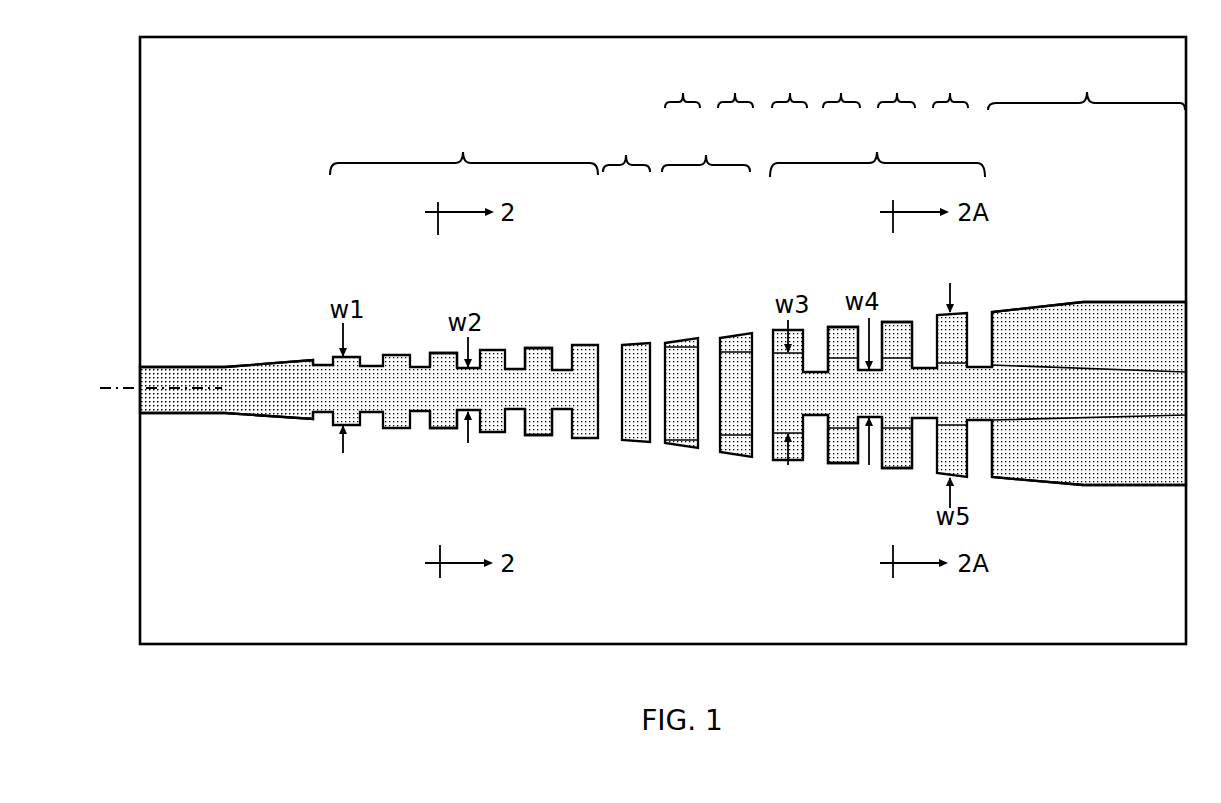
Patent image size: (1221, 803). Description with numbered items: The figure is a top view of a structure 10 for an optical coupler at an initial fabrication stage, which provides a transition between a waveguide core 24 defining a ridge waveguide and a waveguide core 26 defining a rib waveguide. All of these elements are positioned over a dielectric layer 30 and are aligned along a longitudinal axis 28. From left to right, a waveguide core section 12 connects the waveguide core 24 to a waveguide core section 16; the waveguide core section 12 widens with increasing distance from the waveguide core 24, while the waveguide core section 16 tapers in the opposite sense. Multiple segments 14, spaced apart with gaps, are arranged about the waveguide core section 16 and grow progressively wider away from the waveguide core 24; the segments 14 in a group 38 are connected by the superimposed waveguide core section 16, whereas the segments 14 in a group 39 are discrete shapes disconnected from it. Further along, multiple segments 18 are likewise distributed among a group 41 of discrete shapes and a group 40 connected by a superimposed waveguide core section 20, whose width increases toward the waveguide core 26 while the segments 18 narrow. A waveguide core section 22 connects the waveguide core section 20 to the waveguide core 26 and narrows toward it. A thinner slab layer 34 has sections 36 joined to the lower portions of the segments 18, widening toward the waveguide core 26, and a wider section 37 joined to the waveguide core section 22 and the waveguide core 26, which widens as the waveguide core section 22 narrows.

The structure 10 is at (256, 195).
The waveguide core section 12 is at (278, 385).
The segments 14 is at (442, 362).
The waveguide core section 16 is at (418, 395).
The segments 18 is at (738, 385).
The waveguide core section 20 is at (950, 393).
The waveguide core section 22 is at (1028, 402).
The waveguide core 24 is at (173, 400).
The waveguide core 26 is at (1130, 393).
The longitudinal axis 28 is at (135, 388).
The dielectric layer 30 is at (228, 605).
The slab layer 34 is at (1118, 457).
The sections of slab layer 36 is at (816, 86).
The section of slab layer 37 is at (1086, 88).
The group 38 is at (464, 149).
The group 39 is at (626, 149).
The group 40 is at (877, 148).
The group 41 is at (706, 148).